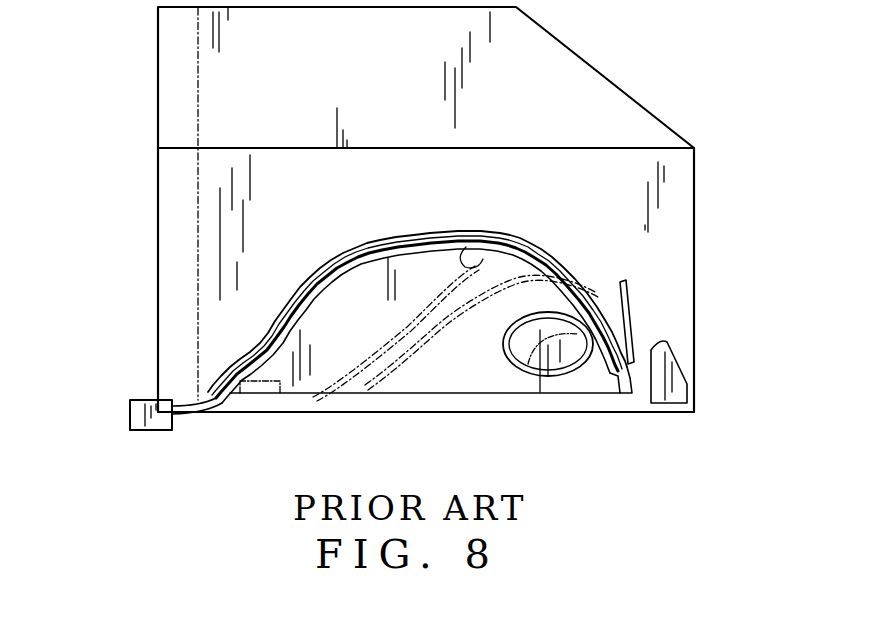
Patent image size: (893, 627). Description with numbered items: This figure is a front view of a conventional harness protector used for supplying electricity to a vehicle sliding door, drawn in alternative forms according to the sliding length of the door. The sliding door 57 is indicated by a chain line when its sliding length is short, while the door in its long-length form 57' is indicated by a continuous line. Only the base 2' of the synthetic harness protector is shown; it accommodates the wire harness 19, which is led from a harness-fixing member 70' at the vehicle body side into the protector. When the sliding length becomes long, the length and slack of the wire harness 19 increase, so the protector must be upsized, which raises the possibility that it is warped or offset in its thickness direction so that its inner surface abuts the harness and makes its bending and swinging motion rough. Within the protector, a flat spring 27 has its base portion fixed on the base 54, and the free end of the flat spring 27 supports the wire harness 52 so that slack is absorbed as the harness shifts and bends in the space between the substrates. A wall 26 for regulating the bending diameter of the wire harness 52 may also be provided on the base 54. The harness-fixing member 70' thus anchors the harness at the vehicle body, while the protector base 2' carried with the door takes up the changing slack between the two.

The panel wall 57' is at (120, 281).
The sliding door 57 is at (140, 204).
The harness-fixing member 70' is at (175, 453).
The base 2' is at (403, 301).
The wire harness 19 is at (383, 256).
The flat spring 27 is at (466, 248).
The base 54 is at (427, 318).
The wire harness 52 is at (405, 358).
The wall 26 is at (500, 357).